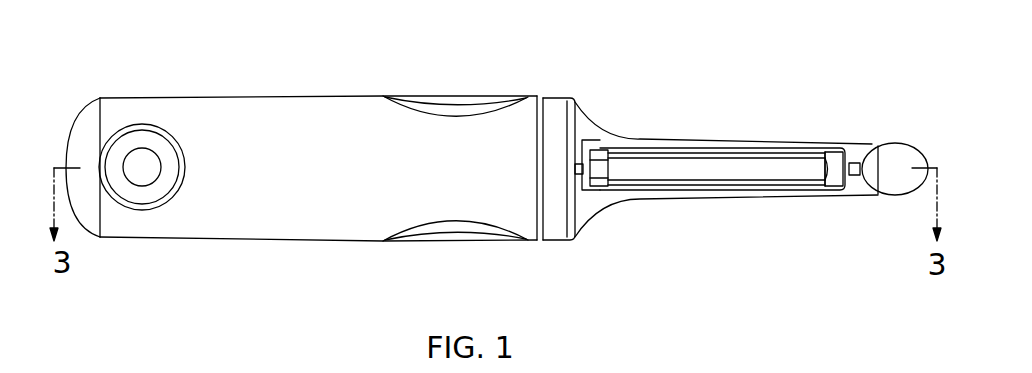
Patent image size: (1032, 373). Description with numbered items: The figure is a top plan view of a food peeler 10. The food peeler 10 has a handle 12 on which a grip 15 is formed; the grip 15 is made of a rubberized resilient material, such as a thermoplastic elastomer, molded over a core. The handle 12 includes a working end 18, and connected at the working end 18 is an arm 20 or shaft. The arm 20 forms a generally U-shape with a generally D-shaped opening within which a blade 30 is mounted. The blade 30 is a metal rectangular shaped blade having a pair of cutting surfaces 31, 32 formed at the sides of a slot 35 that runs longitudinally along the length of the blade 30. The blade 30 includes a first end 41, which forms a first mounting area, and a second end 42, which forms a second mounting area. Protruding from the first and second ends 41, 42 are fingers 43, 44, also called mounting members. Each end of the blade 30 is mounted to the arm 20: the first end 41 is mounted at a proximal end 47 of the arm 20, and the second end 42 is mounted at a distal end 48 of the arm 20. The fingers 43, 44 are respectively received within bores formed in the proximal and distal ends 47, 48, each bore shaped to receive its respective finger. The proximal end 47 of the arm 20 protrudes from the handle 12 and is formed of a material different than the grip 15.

The food peeler 10 is at (795, 71).
The handle 12 is at (272, 233).
The grip 15 is at (255, 112).
The working end 18 is at (547, 106).
The arm 20 is at (612, 209).
The blade 30 is at (751, 148).
The cutting surface 31 is at (680, 148).
The cutting surface 32 is at (712, 186).
The slot 35 is at (760, 174).
The first end 41 is at (597, 153).
The second end 42 is at (841, 148).
The finger 43 is at (578, 172).
The finger 44 is at (854, 176).
The proximal end 47 is at (546, 241).
The distal end 48 is at (880, 143).